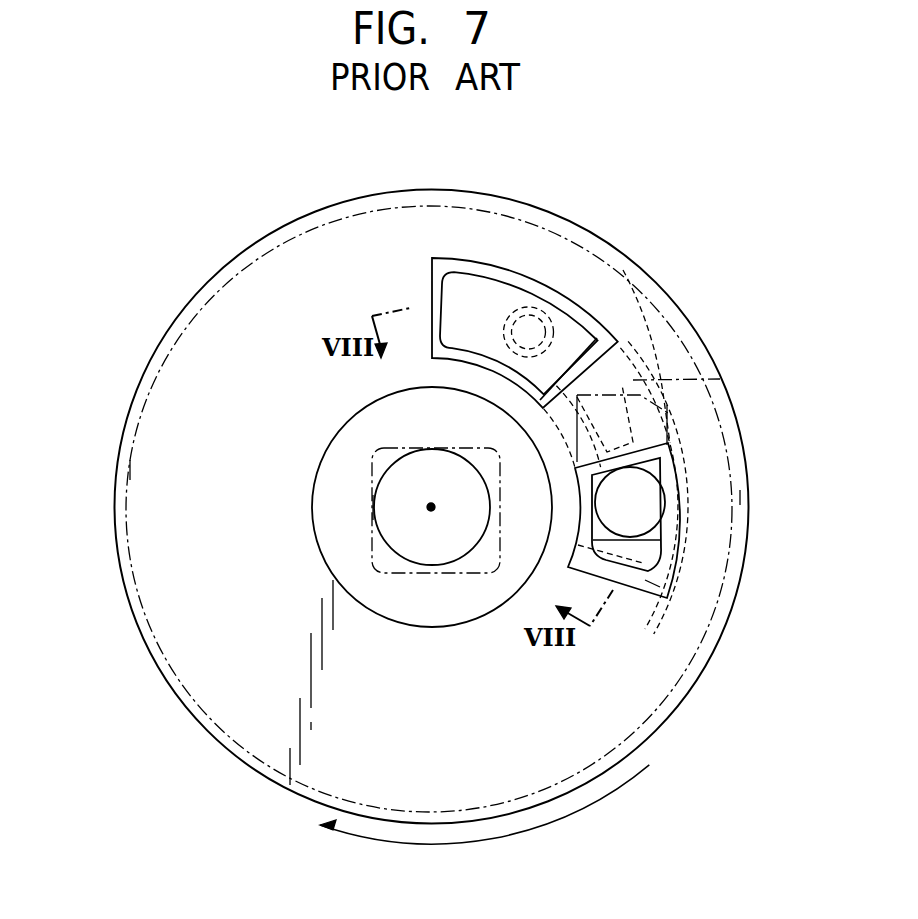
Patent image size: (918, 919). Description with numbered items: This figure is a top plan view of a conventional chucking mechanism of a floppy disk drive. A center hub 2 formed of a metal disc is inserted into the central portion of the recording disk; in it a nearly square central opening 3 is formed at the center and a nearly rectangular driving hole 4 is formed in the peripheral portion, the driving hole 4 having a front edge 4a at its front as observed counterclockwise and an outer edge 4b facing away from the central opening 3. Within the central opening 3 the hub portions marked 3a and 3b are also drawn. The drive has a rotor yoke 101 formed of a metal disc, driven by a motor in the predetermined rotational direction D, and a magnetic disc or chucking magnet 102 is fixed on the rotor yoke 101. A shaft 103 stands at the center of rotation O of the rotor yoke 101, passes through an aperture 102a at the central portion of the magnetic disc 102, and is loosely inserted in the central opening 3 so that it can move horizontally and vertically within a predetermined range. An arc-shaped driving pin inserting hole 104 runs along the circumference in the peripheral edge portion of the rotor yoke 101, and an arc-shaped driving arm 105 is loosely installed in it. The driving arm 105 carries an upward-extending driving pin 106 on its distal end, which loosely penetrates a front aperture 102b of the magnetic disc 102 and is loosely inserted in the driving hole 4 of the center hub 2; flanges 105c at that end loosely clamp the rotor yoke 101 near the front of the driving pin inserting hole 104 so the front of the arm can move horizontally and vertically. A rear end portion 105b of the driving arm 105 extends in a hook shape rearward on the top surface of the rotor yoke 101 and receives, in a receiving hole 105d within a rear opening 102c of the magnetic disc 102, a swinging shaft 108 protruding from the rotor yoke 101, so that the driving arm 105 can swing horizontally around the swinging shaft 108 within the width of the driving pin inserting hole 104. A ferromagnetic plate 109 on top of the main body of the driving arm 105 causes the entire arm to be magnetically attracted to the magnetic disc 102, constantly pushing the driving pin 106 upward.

The center hub 2 is at (172, 335).
The rotor yoke 101 is at (132, 400).
The magnetic disc 102 is at (130, 468).
The aperture 102a is at (315, 520).
The front aperture 102b is at (660, 580).
The rear opening 102c is at (428, 262).
The central opening 3 is at (400, 575).
The disk hub 3a is at (373, 500).
The disk center hole 3b is at (432, 448).
The shaft 103 is at (438, 535).
The driving pin inserting hole 104 is at (622, 393).
The driving arm 105 is at (576, 330).
The rear end portion 105b is at (472, 302).
The flange 105c is at (630, 563).
The receiving hole 105d is at (530, 308).
The driving pin 106 is at (640, 513).
The swinging shaft 108 is at (556, 322).
The ferromagnetic plate 109 is at (700, 432).
The driving hole 4 is at (718, 379).
The front edge 4a is at (645, 580).
The outer edge 4b is at (748, 497).
The center of rotation O is at (431, 507).
The rotational direction D is at (470, 804).